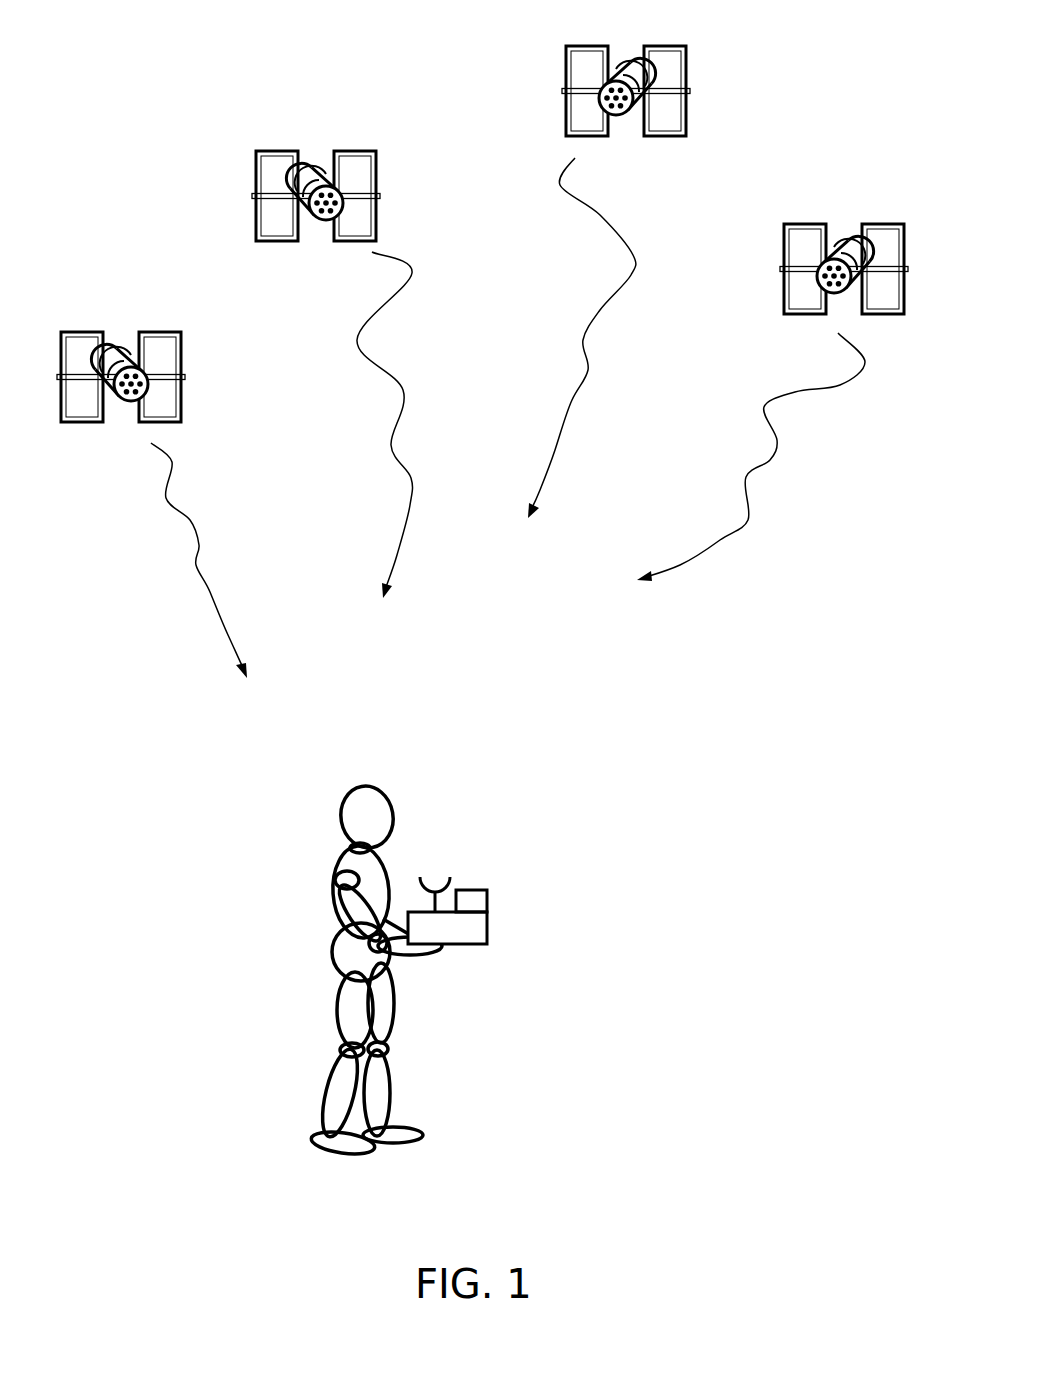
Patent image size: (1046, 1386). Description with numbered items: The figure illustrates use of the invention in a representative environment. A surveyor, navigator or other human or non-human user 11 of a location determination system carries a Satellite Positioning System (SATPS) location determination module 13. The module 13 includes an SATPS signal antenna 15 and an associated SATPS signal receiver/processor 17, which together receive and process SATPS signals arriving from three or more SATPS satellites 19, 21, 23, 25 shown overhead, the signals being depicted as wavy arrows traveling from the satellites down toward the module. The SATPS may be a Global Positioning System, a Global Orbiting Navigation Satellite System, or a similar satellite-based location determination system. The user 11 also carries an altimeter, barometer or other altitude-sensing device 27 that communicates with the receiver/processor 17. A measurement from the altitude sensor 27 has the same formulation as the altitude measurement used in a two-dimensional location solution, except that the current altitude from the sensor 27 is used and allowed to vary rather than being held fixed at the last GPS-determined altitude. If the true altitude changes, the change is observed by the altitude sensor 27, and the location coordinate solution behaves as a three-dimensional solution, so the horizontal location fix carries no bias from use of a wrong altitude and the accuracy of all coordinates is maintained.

The user 11 is at (355, 908).
The SATPS location determination module 13 is at (485, 928).
The SATPS signal antenna 15 is at (450, 877).
The SATPS signal receiver/processor 17 is at (475, 935).
The SATPS satellite 19 is at (128, 367).
The SATPS satellite 21 is at (322, 181).
The SATPS satellite 23 is at (624, 96).
The SATPS satellite 25 is at (842, 270).
The altitude-sensing device 27 is at (472, 902).